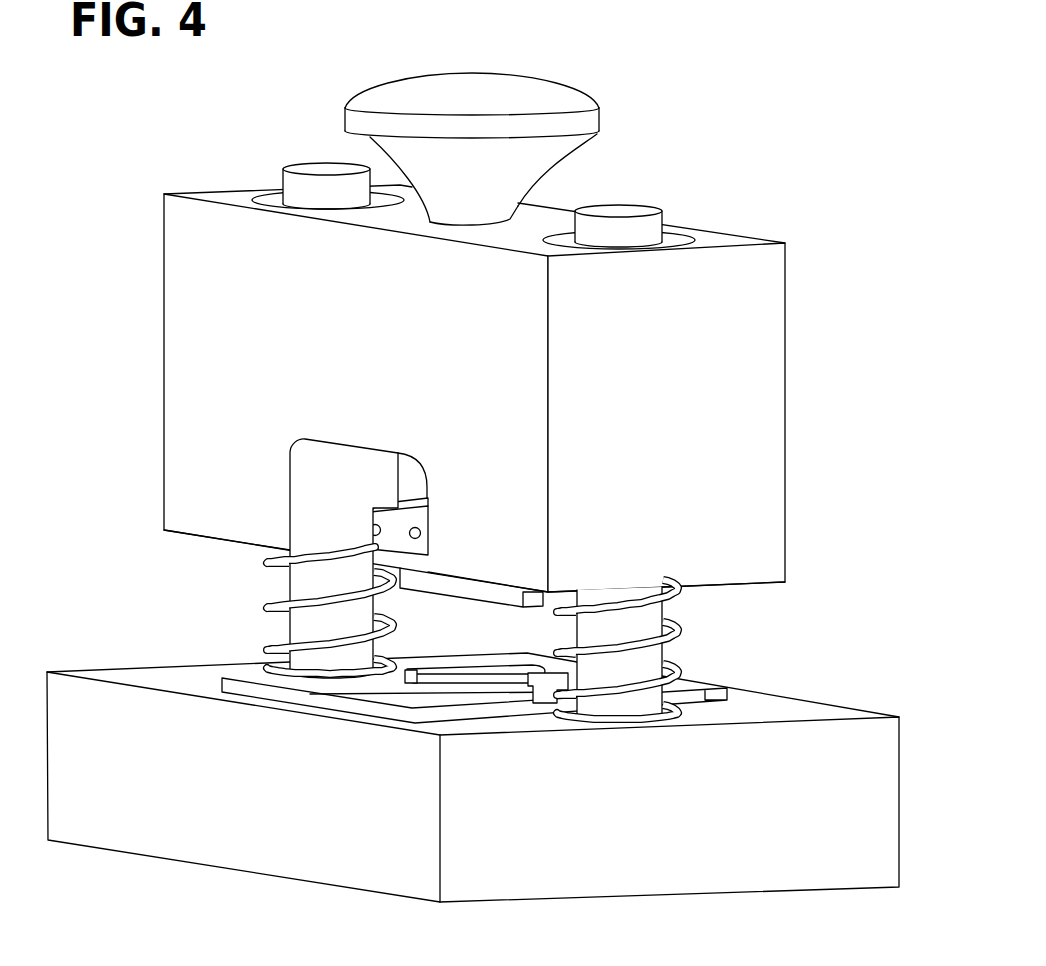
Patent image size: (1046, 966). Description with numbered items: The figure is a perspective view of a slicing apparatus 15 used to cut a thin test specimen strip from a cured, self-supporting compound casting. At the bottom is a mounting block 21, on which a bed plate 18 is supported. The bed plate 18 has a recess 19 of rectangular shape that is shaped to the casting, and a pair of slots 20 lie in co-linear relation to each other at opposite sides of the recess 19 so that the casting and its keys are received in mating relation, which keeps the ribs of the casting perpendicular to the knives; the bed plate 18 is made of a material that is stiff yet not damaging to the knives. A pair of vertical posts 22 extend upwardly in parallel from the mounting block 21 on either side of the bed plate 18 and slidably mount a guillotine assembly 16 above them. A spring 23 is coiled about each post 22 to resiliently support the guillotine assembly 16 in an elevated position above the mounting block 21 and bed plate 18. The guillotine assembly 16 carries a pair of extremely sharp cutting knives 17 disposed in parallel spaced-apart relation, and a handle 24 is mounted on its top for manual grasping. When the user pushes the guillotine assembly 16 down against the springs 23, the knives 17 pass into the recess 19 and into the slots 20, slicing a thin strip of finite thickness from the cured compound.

The slicing apparatus 15 is at (138, 373).
The guillotine assembly 16 is at (462, 399).
The cutting knives 17 is at (435, 587).
The bed plate 18 is at (467, 702).
The recess 19 is at (418, 650).
The slots 20 is at (408, 678).
The mounting block 21 is at (240, 816).
The vertical posts 22 is at (307, 583).
The spring 23 is at (287, 602).
The handle 24 is at (560, 97).